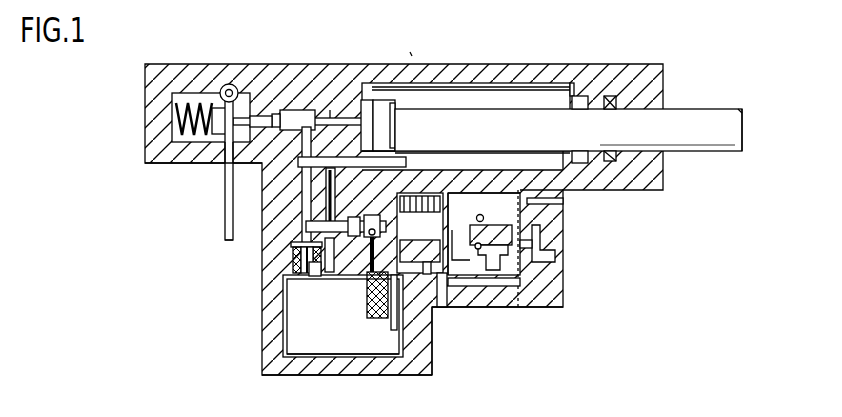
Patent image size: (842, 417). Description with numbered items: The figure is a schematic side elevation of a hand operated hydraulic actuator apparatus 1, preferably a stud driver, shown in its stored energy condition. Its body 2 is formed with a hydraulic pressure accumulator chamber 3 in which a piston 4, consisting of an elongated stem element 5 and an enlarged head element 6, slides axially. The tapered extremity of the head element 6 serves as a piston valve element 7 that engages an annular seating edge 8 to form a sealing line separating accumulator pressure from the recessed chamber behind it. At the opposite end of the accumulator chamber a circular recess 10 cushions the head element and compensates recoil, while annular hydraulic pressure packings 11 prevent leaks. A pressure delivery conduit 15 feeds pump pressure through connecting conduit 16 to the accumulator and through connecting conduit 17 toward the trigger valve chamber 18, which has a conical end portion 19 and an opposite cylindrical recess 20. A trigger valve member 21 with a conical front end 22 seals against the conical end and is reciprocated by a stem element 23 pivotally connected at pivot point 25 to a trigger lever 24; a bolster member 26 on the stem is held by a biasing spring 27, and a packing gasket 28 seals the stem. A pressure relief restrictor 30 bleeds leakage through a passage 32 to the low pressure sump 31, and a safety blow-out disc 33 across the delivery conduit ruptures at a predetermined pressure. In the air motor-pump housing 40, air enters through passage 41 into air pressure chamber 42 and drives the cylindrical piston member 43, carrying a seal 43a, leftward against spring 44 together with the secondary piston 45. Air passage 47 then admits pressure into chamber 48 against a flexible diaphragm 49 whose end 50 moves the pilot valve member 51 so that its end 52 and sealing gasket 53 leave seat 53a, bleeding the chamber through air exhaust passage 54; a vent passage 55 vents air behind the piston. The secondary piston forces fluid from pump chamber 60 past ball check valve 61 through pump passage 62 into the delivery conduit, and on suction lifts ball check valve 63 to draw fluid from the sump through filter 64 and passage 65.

The actuator apparatus 1 is at (410, 54).
The body 2 is at (571, 88).
The hydraulic pressure accumulator chamber 3 is at (462, 90).
The piston 4 is at (682, 108).
The stem element 5 is at (743, 129).
The enlarged head element 6 is at (397, 104).
The piston valve element 7 is at (382, 100).
The annular seating edge 8 is at (364, 100).
The circular recess 10 is at (582, 96).
The annular hydraulic pressure packings 11 is at (611, 97).
The pressure delivery conduit 15 is at (263, 208).
The connecting conduit 16 is at (410, 198).
The connecting conduit 17 is at (329, 108).
The trigger valve chamber 18 is at (277, 112).
The conical end portion 19 is at (252, 196).
The cylindrical recess 20 is at (240, 170).
The trigger valve member 21 is at (243, 190).
The conical front end 22 is at (300, 110).
The stem element 23 is at (198, 167).
The trigger lever 24 is at (223, 236).
The pivot point 25 is at (216, 94).
The bolster member 26 is at (176, 118).
The biasing spring 27 is at (170, 152).
The annular hydraulic packing gasket 28 is at (266, 95).
The pressure relief restrictor 30 is at (372, 148).
The low pressure sump 31 is at (316, 336).
The passage 32 is at (290, 243).
The safety blow-out disc 33 is at (292, 262).
The air motor-pump housing 40 is at (425, 380).
The passage 41 is at (568, 197).
The air pressure chamber 42 is at (476, 170).
The cylindrical piston member 43 is at (467, 280).
The seal 43a is at (460, 210).
The spring 44 is at (392, 216).
The secondary piston 45 is at (428, 170).
The air passage 47 is at (490, 278).
The chamber 48 is at (556, 204).
The flexible diaphragm 49 is at (530, 257).
The end of pilot valve member 50 is at (556, 238).
The pilot valve member 51 is at (517, 212).
The end of pilot valve member 52 is at (533, 277).
The sealing gasket 53 is at (500, 214).
The seat 53a is at (483, 215).
The air exhaust passage 54 is at (502, 305).
The vent passage 55 is at (432, 347).
The pump chamber 60 is at (341, 200).
The ball check valve 61 is at (334, 243).
The pump passage 62 is at (316, 277).
The ball check valve 63 is at (367, 290).
The filter 64 is at (362, 320).
The passage 65 is at (393, 322).